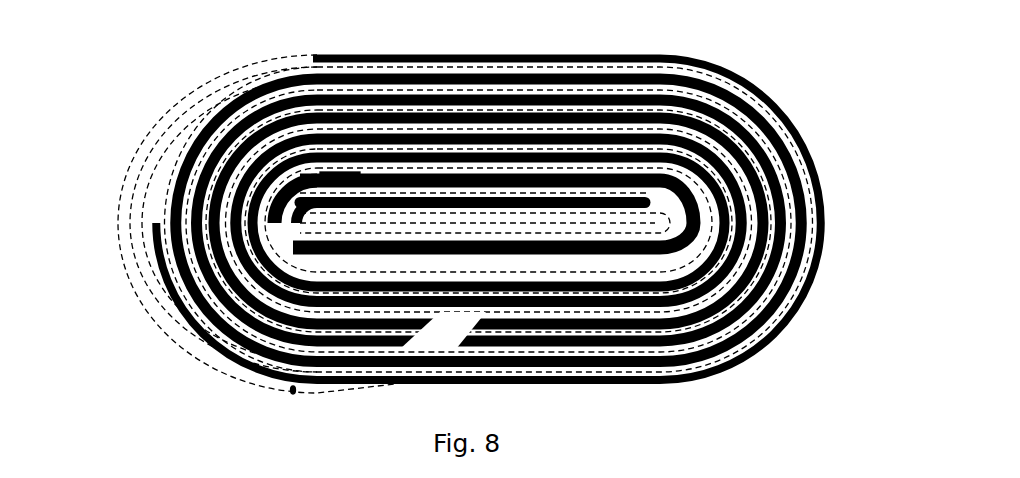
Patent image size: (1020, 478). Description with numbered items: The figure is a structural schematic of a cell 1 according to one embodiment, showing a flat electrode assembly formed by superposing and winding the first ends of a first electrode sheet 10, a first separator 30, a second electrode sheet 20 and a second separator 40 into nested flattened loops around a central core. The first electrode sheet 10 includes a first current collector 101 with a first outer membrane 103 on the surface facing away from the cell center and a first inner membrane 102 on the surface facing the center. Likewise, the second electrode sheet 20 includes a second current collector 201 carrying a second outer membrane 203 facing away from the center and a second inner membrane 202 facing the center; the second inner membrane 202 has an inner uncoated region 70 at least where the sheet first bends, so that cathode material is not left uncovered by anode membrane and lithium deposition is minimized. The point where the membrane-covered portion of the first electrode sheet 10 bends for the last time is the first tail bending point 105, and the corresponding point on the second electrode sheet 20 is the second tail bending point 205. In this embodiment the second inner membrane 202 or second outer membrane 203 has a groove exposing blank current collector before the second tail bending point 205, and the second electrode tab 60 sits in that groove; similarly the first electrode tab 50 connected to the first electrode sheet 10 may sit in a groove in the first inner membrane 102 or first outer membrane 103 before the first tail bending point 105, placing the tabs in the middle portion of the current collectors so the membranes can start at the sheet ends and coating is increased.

The cell 1 is at (112, 218).
The first electrode sheet 10 is at (518, 236).
The first current collector 101 is at (735, 345).
The first inner membrane 102 is at (728, 362).
The first outer membrane 103 is at (748, 322).
The first tail bending point 105 is at (812, 217).
The second electrode sheet 20 is at (384, 277).
The second current collector 201 is at (305, 270).
The second inner membrane 202 is at (355, 253).
The second outer membrane 203 is at (283, 292).
The second tail bending point 205 is at (825, 221).
The first separator 30 is at (640, 195).
The second separator 40 is at (660, 215).
The first electrode tab 50 is at (648, 157).
The second electrode tab 60 is at (327, 172).
The inner uncoated region 70 is at (780, 300).